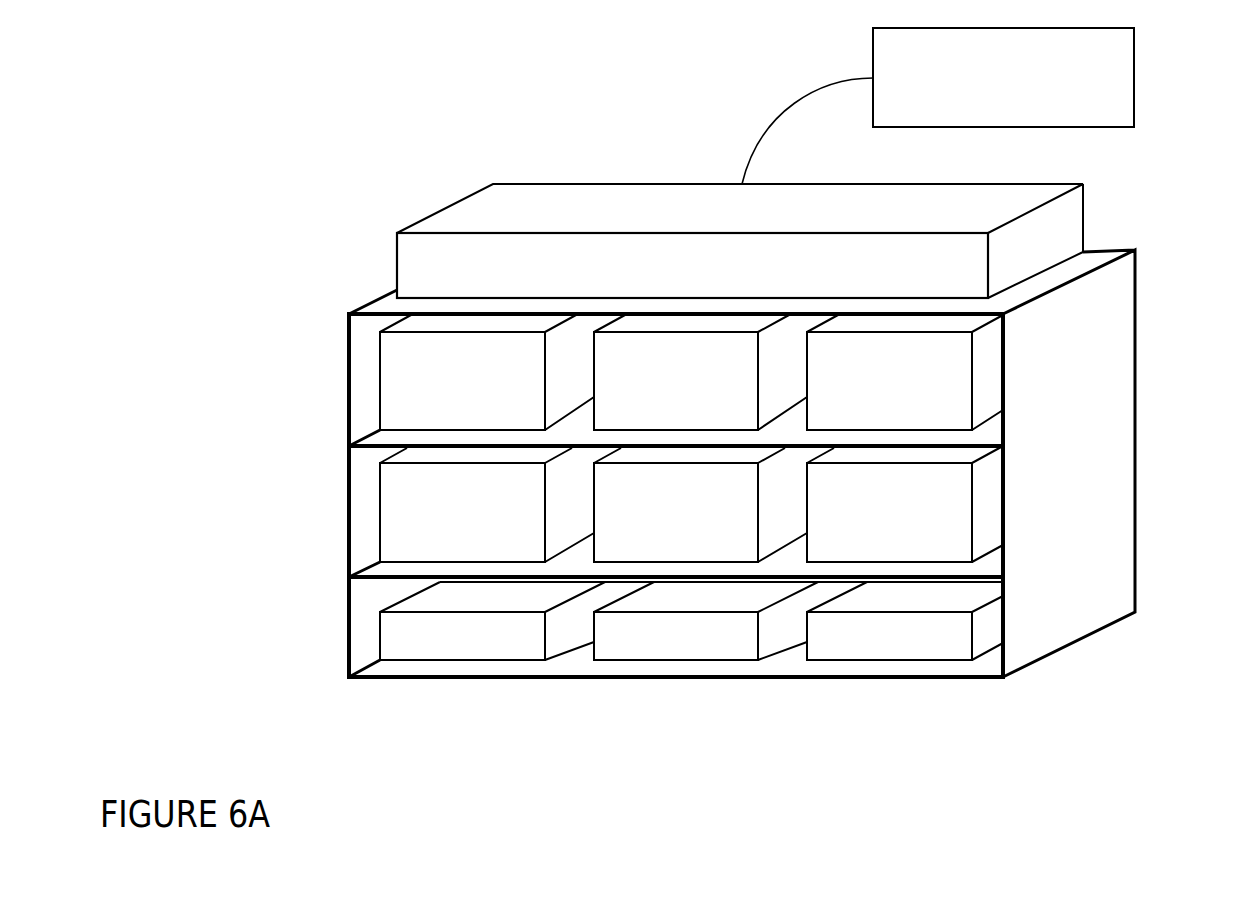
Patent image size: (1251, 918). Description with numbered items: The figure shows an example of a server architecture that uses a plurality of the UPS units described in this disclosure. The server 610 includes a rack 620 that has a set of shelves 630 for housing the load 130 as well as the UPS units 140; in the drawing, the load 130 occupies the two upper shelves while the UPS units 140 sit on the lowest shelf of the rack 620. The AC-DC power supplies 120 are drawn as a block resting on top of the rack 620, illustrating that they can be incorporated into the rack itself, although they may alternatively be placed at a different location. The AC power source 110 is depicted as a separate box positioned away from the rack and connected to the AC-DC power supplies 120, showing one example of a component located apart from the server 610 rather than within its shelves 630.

The AC power source 110 is at (1134, 95).
The AC-DC power supplies 120 is at (397, 268).
The load 130 is at (380, 362).
The UPS units 140 is at (380, 632).
The server 610 is at (690, 531).
The rack 620 is at (349, 425).
The shelves 630 is at (1003, 448).